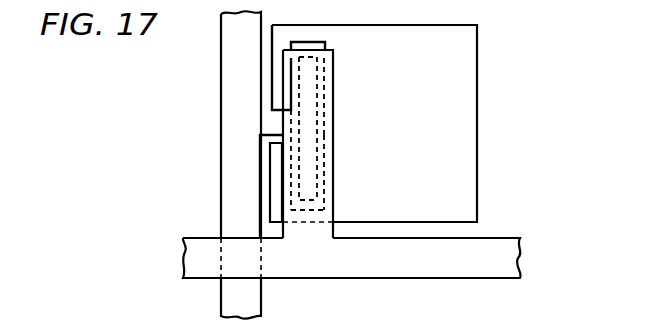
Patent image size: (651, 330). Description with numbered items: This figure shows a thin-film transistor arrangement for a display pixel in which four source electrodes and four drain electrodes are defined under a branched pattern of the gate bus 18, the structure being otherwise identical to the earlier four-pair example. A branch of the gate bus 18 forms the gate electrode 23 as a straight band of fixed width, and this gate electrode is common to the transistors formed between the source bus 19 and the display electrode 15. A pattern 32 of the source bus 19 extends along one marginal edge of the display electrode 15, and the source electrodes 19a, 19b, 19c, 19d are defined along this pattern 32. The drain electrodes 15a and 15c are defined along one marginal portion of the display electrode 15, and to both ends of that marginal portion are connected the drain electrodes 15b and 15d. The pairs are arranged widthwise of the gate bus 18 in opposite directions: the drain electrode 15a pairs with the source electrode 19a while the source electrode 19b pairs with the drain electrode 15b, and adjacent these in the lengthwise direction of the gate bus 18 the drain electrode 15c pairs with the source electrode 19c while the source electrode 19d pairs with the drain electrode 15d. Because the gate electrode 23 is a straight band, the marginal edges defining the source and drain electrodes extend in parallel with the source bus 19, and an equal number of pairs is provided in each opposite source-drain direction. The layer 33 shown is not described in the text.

The display electrode 15 is at (477, 108).
The drain electrode 15a is at (290, 100).
The drain electrode 15b is at (333, 93).
The drain electrode 15c is at (280, 156).
The drain electrode 15d is at (328, 163).
The gate bus 18 is at (372, 279).
The source bus 19 is at (228, 65).
The source electrode 19a is at (291, 78).
The source electrode 19b is at (326, 80).
The source electrode 19c is at (276, 178).
The source electrode 19d is at (323, 180).
The gate electrode 23 is at (335, 56).
The pattern 32 is at (321, 120).
The source electrode 33 is at (283, 53).